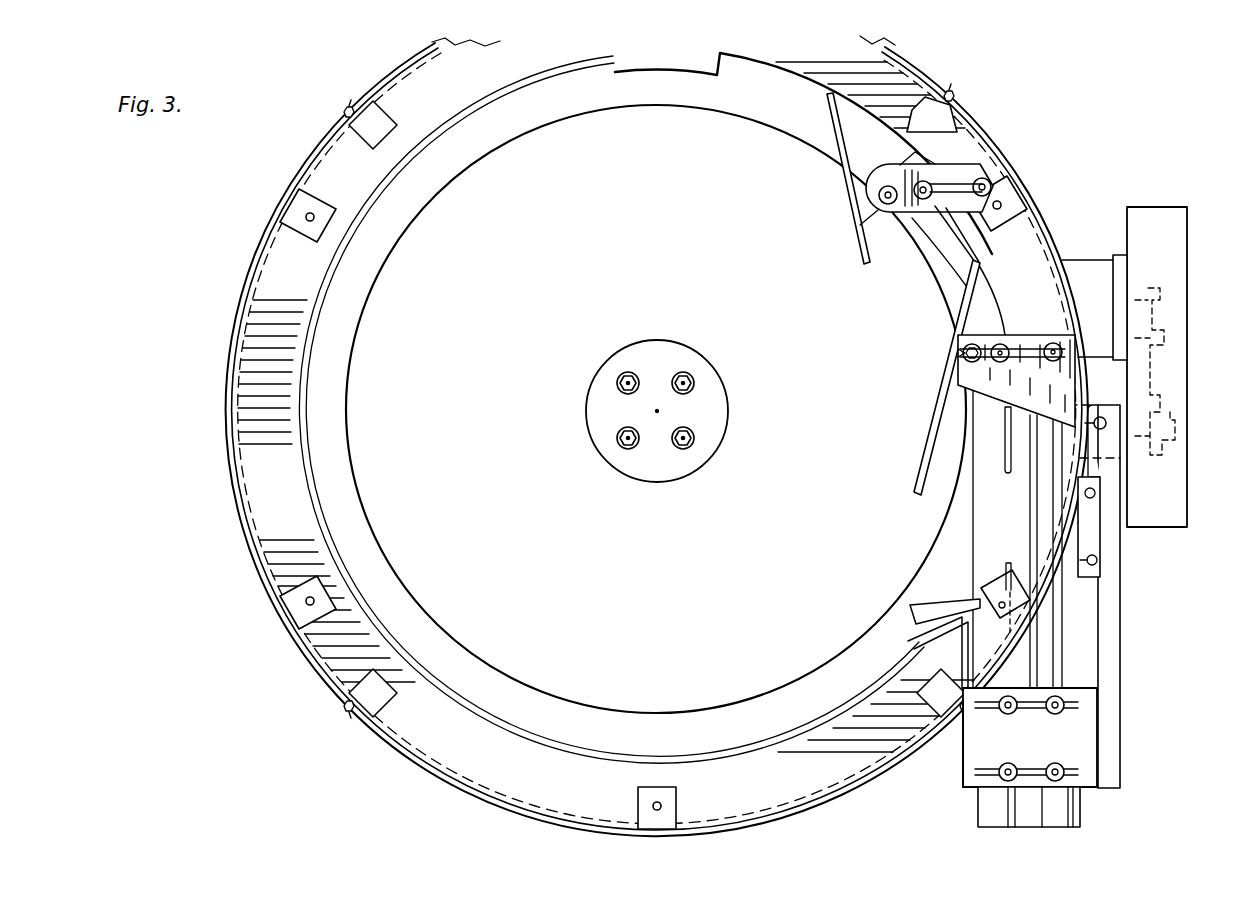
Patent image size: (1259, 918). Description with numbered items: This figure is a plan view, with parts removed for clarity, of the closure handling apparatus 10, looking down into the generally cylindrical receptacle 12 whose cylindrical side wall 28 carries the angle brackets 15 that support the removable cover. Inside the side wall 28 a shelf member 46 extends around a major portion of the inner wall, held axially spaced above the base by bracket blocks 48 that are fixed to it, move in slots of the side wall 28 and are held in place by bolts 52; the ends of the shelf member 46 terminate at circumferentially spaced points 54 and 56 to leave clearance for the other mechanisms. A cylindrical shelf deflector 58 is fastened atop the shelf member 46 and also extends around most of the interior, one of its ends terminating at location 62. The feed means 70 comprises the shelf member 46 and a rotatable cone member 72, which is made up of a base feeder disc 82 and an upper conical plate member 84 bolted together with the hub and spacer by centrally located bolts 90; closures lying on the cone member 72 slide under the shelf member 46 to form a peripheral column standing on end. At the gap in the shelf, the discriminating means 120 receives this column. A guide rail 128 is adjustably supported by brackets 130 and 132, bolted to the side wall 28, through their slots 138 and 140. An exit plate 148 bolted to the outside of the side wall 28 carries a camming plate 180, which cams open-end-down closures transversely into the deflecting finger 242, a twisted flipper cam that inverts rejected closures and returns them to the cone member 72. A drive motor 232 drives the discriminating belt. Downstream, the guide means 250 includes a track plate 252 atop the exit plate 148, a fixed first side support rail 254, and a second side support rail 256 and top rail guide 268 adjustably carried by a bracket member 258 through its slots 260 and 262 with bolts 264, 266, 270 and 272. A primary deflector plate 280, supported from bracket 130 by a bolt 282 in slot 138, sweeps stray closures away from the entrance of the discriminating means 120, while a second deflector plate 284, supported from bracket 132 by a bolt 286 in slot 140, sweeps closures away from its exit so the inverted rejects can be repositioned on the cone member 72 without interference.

The closure handling apparatus 10 is at (1029, 150).
The receptacle 12 is at (222, 492).
The angle brackets 15 is at (1008, 200).
The side wall 28 is at (236, 310).
The shelf member 46 is at (490, 730).
The bracket blocks 48 is at (938, 690).
The bolts 52 is at (965, 713).
The shelf end point 54 is at (965, 130).
The shelf end point 56 is at (965, 652).
The shelf deflector 58 is at (338, 265).
The shelf deflector end location 62 is at (624, 67).
The feed means 70 is at (771, 150).
The cone member 72 is at (326, 527).
The base feeder disc 82 is at (373, 566).
The upper conical plate member 84 is at (680, 571).
The bolts 90 is at (695, 432).
The discriminating means 120 is at (930, 522).
The guide rail 128 is at (960, 238).
The bracket 130 is at (907, 205).
The bracket 132 is at (1048, 395).
The slot 138 is at (897, 180).
The slot 140 is at (1025, 345).
The exit plate 148 is at (1112, 595).
The camming plate 180 is at (1085, 537).
The drive motor 232 is at (1090, 270).
The deflecting finger 242 is at (940, 598).
The guide means 250 is at (1176, 739).
The track plate 252 is at (992, 580).
The first side support rail 254 is at (1082, 808).
The second side support rail 256 is at (1005, 808).
The bracket member 258 is at (963, 760).
The slot 260 is at (1062, 705).
The slot 262 is at (1065, 772).
The bolt 264 is at (1009, 714).
The bolt 266 is at (1009, 763).
The top rail guide 268 is at (1058, 655).
The bolt 270 is at (1055, 714).
The bolt 272 is at (1057, 756).
The primary deflector plate 280 is at (858, 245).
The bolt 282 is at (880, 193).
The second deflector plate 284 is at (920, 455).
The bolt 286 is at (963, 351).